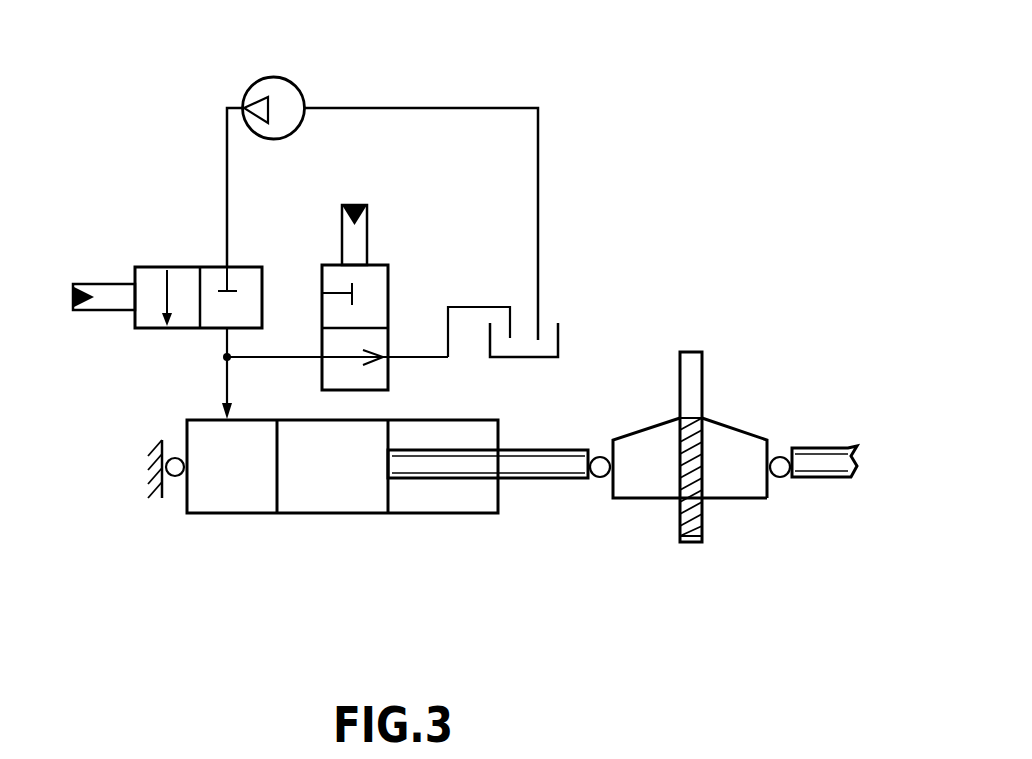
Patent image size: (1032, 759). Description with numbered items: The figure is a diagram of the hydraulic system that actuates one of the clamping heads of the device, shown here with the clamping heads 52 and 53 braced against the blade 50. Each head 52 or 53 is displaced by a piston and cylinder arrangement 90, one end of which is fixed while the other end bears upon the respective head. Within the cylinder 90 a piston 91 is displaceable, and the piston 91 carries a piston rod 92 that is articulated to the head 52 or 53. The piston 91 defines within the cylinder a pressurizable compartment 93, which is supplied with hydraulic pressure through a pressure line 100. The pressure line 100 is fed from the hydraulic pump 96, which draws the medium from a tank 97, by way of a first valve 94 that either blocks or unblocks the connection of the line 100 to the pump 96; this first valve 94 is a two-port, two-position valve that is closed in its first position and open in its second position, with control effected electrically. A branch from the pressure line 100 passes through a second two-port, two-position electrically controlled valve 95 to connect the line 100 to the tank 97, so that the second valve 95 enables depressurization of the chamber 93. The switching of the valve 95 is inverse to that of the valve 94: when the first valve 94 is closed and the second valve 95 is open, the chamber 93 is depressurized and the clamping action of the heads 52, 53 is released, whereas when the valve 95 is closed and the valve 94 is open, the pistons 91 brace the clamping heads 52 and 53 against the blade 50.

The blade 50 is at (692, 542).
The clamping head 52 is at (752, 477).
The clamping head 53 is at (648, 475).
The piston and cylinder arrangement 90 is at (258, 515).
The piston 91 is at (306, 483).
The piston rod 92 is at (452, 465).
The pressurizable compartment 93 is at (250, 483).
The first valve 94 is at (177, 265).
The second valve 95 is at (380, 283).
The hydraulic pump 96 is at (288, 93).
The tank 97 is at (560, 340).
The pressure line 100 is at (225, 348).